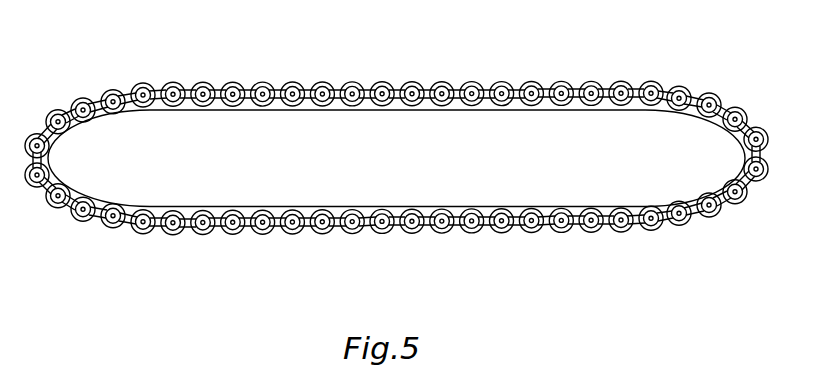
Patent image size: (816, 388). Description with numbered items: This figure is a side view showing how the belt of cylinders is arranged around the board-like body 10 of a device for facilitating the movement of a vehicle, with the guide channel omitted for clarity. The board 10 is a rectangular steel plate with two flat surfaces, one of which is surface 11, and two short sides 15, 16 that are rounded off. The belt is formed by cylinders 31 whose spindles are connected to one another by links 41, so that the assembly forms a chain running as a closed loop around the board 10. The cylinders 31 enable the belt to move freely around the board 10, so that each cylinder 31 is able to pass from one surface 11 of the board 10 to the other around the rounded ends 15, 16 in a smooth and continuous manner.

The board-like body 10 is at (397, 157).
The flat surface 11 is at (219, 93).
The short side 15 is at (45, 130).
The short side 16 is at (748, 128).
The cylinder 31 is at (442, 90).
The link 41 is at (323, 93).